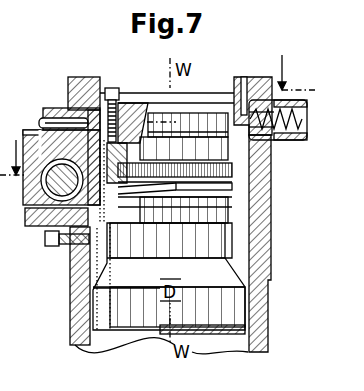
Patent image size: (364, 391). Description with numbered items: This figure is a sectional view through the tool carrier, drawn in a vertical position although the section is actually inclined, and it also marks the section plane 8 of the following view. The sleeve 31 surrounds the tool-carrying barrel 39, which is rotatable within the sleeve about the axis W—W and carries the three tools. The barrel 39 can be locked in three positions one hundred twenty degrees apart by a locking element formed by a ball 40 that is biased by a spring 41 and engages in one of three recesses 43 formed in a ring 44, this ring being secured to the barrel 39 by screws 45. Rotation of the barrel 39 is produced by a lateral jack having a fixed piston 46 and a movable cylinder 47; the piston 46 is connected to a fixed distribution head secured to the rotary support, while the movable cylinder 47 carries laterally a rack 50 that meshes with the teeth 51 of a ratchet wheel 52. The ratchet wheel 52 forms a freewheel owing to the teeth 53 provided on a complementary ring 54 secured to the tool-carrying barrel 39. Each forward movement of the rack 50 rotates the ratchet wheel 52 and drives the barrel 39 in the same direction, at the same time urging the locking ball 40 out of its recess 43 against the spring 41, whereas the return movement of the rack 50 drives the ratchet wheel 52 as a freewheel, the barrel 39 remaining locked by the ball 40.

The section line 8- 8 is at (158, 119).
The sleeve 31 is at (78, 271).
The tool-carrying barrel 39 is at (181, 272).
The ball 40 is at (259, 137).
The spring 41 is at (276, 138).
The recesses 43 is at (258, 108).
The ring 44 is at (232, 108).
The screws 45 is at (112, 100).
The fixed piston 46 is at (46, 238).
The movable cylinder 47 is at (43, 136).
The rack 50 is at (90, 193).
The teeth 51 is at (164, 173).
The ratchet wheel 52 is at (189, 186).
The teeth 53 is at (138, 185).
The complementary ring 54 is at (140, 204).